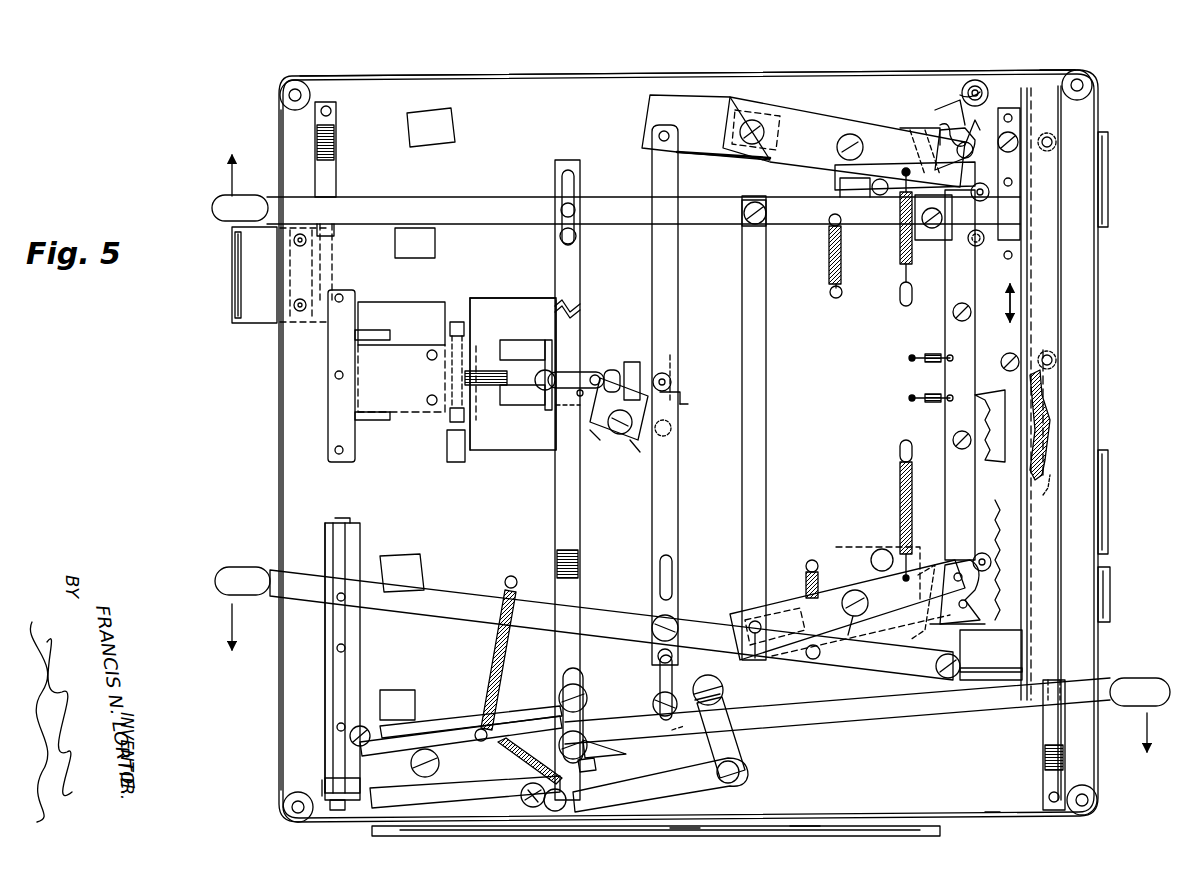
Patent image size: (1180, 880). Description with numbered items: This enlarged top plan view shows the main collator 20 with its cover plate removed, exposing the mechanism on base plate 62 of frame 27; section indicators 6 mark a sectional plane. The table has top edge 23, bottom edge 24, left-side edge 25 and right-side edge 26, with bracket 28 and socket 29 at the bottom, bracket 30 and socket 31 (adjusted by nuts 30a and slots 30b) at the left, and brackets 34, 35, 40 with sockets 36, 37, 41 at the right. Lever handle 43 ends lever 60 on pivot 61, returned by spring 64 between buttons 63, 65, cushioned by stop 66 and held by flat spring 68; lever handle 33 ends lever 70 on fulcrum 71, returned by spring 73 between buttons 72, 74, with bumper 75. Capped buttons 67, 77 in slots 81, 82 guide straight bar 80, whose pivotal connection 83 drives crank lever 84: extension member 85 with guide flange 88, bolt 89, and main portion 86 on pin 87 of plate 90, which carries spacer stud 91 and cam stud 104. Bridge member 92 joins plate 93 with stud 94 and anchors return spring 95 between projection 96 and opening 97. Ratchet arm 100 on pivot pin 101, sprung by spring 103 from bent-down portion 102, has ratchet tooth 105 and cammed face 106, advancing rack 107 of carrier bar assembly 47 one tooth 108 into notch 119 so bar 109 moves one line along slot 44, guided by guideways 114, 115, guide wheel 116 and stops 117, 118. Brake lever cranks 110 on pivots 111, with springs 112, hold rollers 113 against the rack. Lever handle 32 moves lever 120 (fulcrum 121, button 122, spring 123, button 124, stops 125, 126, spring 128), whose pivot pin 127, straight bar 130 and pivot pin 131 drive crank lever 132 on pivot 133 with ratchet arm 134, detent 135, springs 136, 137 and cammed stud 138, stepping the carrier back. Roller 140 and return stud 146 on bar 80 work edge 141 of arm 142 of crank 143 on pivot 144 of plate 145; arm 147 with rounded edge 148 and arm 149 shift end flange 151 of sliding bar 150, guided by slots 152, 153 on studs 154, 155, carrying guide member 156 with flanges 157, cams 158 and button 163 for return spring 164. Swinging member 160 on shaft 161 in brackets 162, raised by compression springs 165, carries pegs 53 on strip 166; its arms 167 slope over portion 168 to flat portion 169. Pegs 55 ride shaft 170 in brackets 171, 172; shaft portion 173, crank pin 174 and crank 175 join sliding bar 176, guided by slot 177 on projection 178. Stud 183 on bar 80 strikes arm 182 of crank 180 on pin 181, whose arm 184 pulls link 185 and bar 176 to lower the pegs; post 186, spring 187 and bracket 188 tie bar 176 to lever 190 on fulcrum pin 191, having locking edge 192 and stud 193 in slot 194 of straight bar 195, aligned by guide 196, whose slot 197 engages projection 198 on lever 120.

The section line 6 is at (200, 380).
The main collator 20 is at (270, 93).
The top edge 23 is at (580, 74).
The bottom edge 24 is at (925, 814).
The left-side edge 25 is at (280, 414).
The right-side edge 26 is at (1100, 106).
The frame 27 is at (985, 812).
The bracket 28 is at (696, 818).
The socket 29 is at (810, 822).
The bracket 30 is at (234, 322).
The nuts 30a is at (300, 250).
The slots 30b is at (285, 302).
The socket 31 is at (236, 284).
The lever handle 32 is at (210, 206).
The lever handle 33 is at (212, 582).
The bracket 34 is at (1108, 226).
The bracket 35 is at (1104, 452).
The socket 36 is at (1108, 192).
The socket 37 is at (1106, 500).
The bracket 40 is at (1106, 568).
The socket 41 is at (1108, 590).
The lever handle 43 is at (1158, 684).
The slot 44 is at (1040, 66).
The carrier bar assembly 47 is at (1010, 328).
The pegs 53 is at (339, 290).
The pegs 55 is at (338, 618).
The lever 60 is at (870, 722).
The pivot 61 is at (372, 736).
The base plate 62 is at (798, 450).
The button 63 is at (476, 732).
The return spring 64 is at (484, 660).
The button 65 is at (506, 580).
The rubber stop 66 is at (384, 690).
The capped button 67 is at (678, 742).
The flat spring 68 is at (1052, 720).
The lever 70 is at (466, 592).
The fulcrum 71 is at (938, 662).
The button 72 is at (826, 670).
The return spring 73 is at (808, 586).
The button 74 is at (810, 562).
The rubber bumper 75 is at (400, 560).
The capped button 77 is at (676, 618).
The straight bar 80 is at (678, 486).
The longitudinal slot 81 is at (660, 678).
The longitudinal slot 82 is at (660, 576).
The pivotal connection 83 is at (650, 134).
The crank lever 84 is at (770, 98).
The extension member 85 is at (724, 108).
The main portion 86 is at (776, 130).
The pin 87 is at (845, 140).
The guide flange 88 is at (774, 160).
The bolt 89 is at (740, 130).
The plate 90 is at (840, 182).
The stud 91 is at (878, 186).
The bridge member 92 is at (896, 360).
The plate member 93 is at (846, 546).
The spacer stud 94 is at (878, 566).
The return spring 95 is at (900, 246).
The projection 96 is at (898, 288).
The opening 97 is at (905, 170).
The ratchet arm 100 is at (955, 110).
The pivot pin 101 is at (1020, 176).
The bent-down portion 102 is at (916, 132).
The spring 103 is at (910, 150).
The stud 104 is at (920, 112).
The ratchet tooth 105 is at (956, 92).
The cammed face 106 is at (950, 150).
The ratchet 107 is at (1020, 120).
The teeth 108 is at (1000, 416).
The bar 109 is at (1020, 356).
The lever crank 110 is at (955, 296).
The pivot 111 is at (955, 314).
The spring 112 is at (966, 384).
The roller 113 is at (1000, 196).
The guideway 114 is at (1040, 330).
The guideway 115 is at (1030, 490).
The guide wheel 116 is at (985, 90).
The stop 117 is at (996, 670).
The stop 118 is at (1012, 250).
The rectangular notch 119 is at (1040, 418).
The lever 120 is at (470, 200).
The fulcrum 121 is at (955, 230).
The button 122 is at (824, 220).
The return spring 123 is at (828, 262).
The button 124 is at (832, 300).
The rubber stop 125 is at (392, 244).
The rubber stop 126 is at (450, 116).
The pivot pin 127 is at (742, 232).
The spring 128 is at (334, 178).
The straight bar 130 is at (768, 416).
The pivot pin 131 is at (744, 666).
The crank lever 132 is at (847, 610).
The pivot 133 is at (850, 640).
The ratchet arm 134 is at (930, 630).
The ratchet tooth 135 is at (1000, 650).
The return spring 136 is at (902, 522).
The spring 137 is at (920, 604).
The cammed stud 138 is at (966, 578).
The roller 140 is at (680, 360).
The edge 141 is at (680, 394).
The arm 142 is at (690, 408).
The crank 143 is at (632, 446).
The pivot 144 is at (598, 446).
The stationary plate 145 is at (515, 462).
The return stud 146 is at (676, 434).
The arm 147 is at (596, 436).
The rounded edge 148 is at (632, 372).
The second arm 149 is at (622, 404).
The sliding bar 150 is at (556, 416).
The end flange 151 is at (640, 362).
The guide slot 152 is at (556, 398).
The guide slot 153 is at (535, 306).
The headed stud 154 is at (608, 370).
The headed stud 155 is at (542, 352).
The guide member 156 is at (410, 310).
The upstanding flanges 157 is at (358, 330).
The flange-like cams 158 is at (474, 322).
The swinging pivoted member 160 is at (401, 378).
The shaft 161 is at (458, 450).
The brackets 162 is at (446, 334).
The button 163 is at (546, 366).
The return spring 164 is at (504, 394).
The return compression springs 165 is at (462, 378).
The strip 166 is at (330, 356).
The arms 167 is at (552, 344).
The portion 168 is at (476, 346).
The flat portion 169 is at (556, 324).
The rotatable shaft 170 is at (330, 682).
The bracket 171 is at (350, 520).
The bracket 172 is at (320, 778).
The portion 173 is at (350, 790).
The crank pin 174 is at (322, 786).
The crank 175 is at (396, 804).
The sliding bar 176 is at (466, 799).
The slot 177 is at (522, 800).
The capped projection 178 is at (562, 800).
The crank 180 is at (726, 722).
The pin 181 is at (708, 680).
The arm 182 is at (678, 648).
The stud 183 is at (658, 658).
The arm 184 is at (742, 760).
The link 185 is at (660, 785).
The post 186 is at (578, 770).
The spring 187 is at (494, 762).
The bracket 188 is at (494, 738).
The lever 190 is at (510, 752).
The fulcrum pin 191 is at (410, 764).
The locking edge 192 is at (582, 750).
The capped stud 193 is at (588, 732).
The slot 194 is at (588, 696).
The straight bar 195 is at (584, 544).
The capped guide member 196 is at (562, 692).
The slot 197 is at (584, 174).
The capped projection 198 is at (584, 200).